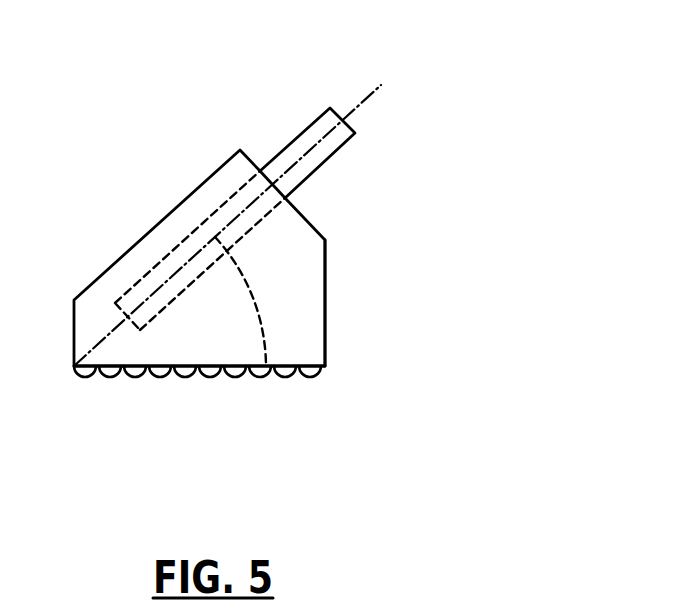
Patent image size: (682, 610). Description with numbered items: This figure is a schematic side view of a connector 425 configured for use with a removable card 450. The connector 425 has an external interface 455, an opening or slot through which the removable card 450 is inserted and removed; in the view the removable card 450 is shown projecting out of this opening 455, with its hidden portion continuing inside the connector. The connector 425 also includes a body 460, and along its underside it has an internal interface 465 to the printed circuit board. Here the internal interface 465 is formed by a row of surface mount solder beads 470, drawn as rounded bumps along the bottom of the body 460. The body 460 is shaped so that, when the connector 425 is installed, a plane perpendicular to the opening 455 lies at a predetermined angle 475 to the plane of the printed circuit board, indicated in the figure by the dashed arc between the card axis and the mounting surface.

The connector 425 is at (452, 268).
The removable card 450 is at (303, 132).
The external interface 455 is at (287, 199).
The body 460 is at (325, 328).
The internal interface 465 is at (336, 408).
The surface mount solder beads 470 is at (133, 380).
The predetermined angle 475 is at (254, 302).